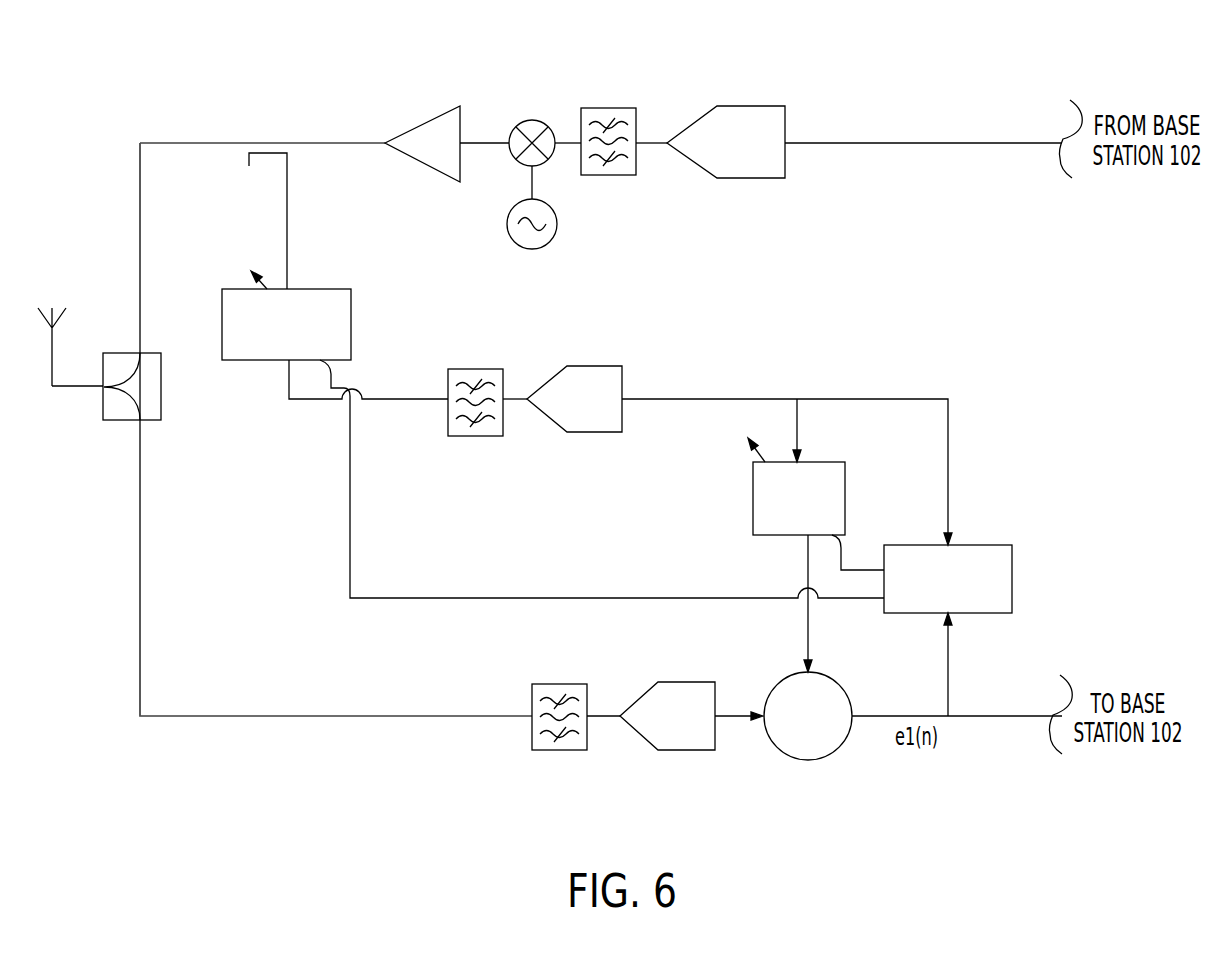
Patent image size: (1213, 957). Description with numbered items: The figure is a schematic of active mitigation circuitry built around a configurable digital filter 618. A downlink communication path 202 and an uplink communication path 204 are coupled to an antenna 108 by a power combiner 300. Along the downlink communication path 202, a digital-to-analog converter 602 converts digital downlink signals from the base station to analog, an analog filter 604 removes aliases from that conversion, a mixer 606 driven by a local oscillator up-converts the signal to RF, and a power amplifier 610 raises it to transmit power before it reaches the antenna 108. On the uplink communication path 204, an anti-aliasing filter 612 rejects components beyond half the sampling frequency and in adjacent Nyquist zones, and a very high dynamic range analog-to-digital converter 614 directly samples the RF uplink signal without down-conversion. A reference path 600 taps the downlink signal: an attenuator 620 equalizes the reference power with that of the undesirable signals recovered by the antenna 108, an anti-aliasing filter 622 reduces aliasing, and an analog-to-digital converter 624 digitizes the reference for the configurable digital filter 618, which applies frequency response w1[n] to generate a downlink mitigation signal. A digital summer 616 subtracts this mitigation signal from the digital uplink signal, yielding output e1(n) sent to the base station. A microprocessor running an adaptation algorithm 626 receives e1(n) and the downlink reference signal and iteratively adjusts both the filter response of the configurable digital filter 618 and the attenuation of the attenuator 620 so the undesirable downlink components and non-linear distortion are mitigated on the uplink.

The downlink communication path 202 is at (196, 90).
The uplink communication path 204 is at (376, 752).
The antenna 108 is at (58, 262).
The power combiner 300 is at (162, 383).
The reference path 600 is at (288, 443).
The digital-to-analog converter 602 is at (747, 106).
The analog filter 604 is at (617, 108).
The mixer 606 is at (530, 119).
The power amplifier 610 is at (412, 126).
The anti-aliasing filter 612 is at (587, 690).
The analog-to-digital converter 614 is at (715, 682).
The digital summer 616 is at (848, 697).
The configurable digital filter 618 is at (845, 480).
The attenuator 620 is at (310, 289).
The anti-aliasing filter 622 is at (477, 369).
The analog-to-digital converter 624 is at (593, 366).
The adaptation algorithm 626 is at (1012, 570).